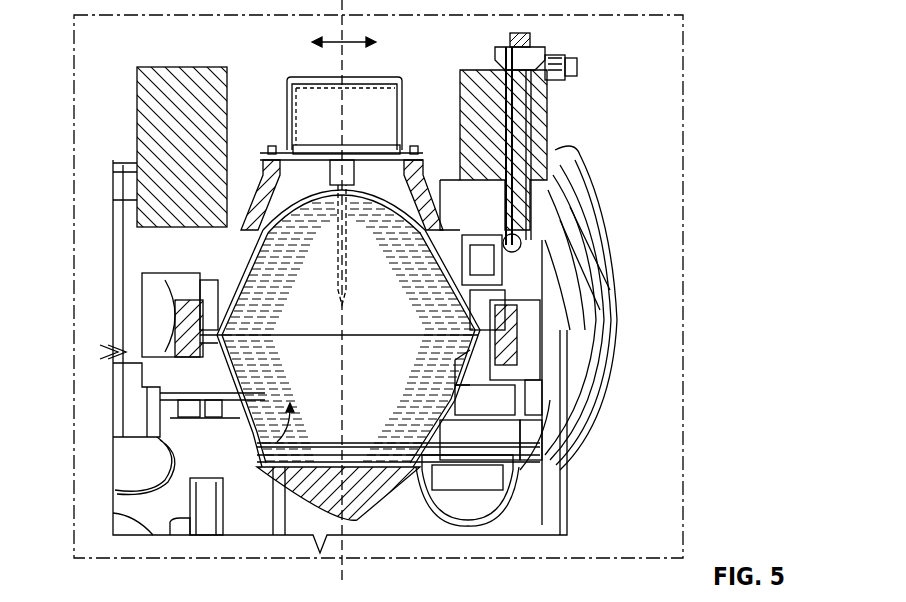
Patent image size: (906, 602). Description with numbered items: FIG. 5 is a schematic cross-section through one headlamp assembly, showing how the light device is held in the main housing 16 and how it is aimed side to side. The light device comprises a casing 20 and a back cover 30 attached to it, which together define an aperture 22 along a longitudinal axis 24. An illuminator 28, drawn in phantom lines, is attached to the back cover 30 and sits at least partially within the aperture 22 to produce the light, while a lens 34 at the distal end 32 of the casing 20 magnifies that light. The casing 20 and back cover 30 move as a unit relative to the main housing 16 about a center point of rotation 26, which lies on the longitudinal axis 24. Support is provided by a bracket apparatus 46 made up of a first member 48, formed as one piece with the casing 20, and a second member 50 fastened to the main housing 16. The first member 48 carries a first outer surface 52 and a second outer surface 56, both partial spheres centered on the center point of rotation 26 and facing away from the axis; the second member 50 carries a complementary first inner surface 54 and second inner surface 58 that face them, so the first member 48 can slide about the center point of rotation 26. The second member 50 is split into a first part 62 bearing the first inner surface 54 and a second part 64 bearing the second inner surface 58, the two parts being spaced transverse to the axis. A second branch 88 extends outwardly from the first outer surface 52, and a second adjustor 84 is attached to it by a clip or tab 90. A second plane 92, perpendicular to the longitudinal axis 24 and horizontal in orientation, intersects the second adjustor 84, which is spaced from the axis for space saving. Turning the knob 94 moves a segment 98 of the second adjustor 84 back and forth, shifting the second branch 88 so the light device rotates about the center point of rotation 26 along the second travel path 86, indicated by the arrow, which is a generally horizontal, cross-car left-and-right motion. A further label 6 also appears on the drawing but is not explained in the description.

The fuel injector assembly 6 is at (520, 317).
The main housing 16 is at (600, 350).
The casing 20 is at (245, 438).
The aperture 22 is at (277, 458).
The longitudinal axis 24 is at (360, 72).
The center point of rotation 26 is at (343, 355).
The illuminator 28 is at (333, 280).
The back cover 30 is at (200, 190).
The distal end 32 is at (413, 493).
The lens 34 is at (355, 513).
The bracket apparatus 46 is at (165, 385).
The first member 48 is at (470, 350).
The second member 50 is at (188, 300).
The first outer surface 52 is at (517, 287).
The first inner surface 54 is at (465, 338).
The second outer surface 56 is at (182, 332).
The second inner surface 58 is at (210, 283).
The first part 62 is at (545, 393).
The second part 64 is at (175, 360).
The second adjustor 84 is at (558, 80).
The second travel path 86 is at (316, 44).
The second branch 88 is at (550, 263).
The clip or tab 90 is at (462, 222).
The second plane 92 is at (686, 122).
The knob 94 is at (532, 40).
The segment 98 is at (528, 160).